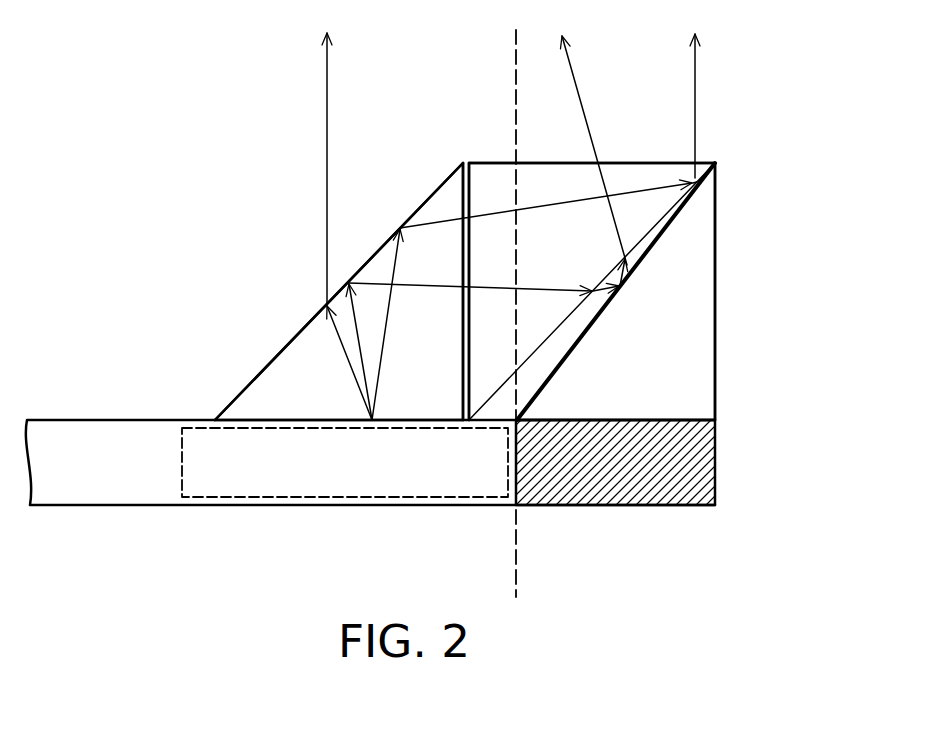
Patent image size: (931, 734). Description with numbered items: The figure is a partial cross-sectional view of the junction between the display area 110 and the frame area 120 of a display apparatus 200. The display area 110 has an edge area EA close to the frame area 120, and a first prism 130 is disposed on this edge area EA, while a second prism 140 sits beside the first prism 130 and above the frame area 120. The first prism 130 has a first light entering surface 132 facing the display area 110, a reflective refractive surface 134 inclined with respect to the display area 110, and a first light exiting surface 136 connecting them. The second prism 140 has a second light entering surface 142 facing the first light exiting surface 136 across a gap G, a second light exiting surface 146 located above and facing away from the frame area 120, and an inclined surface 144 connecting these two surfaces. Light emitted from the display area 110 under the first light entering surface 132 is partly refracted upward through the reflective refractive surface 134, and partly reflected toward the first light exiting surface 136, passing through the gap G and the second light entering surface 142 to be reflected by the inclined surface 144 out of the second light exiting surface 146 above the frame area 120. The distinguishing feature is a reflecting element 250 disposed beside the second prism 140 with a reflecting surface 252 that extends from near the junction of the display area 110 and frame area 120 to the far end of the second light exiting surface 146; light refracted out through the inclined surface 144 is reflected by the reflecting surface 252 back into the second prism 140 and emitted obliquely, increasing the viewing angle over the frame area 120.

The display area 110 is at (135, 506).
The frame area 120 is at (628, 510).
The first prism 130 is at (432, 212).
The first light entering surface 132 is at (304, 417).
The reflective refractive surface 134 is at (385, 242).
The first light exiting surface 136 is at (461, 354).
The second prism 140 is at (555, 185).
The second light entering surface 142 is at (472, 203).
The inclined surface 144 is at (663, 223).
The second light exiting surface 146 is at (712, 160).
The display apparatus 200 is at (707, 588).
The reflecting element 250 is at (695, 363).
The reflecting surface 252 is at (653, 237).
The edge area EA is at (250, 498).
The gap G is at (467, 315).